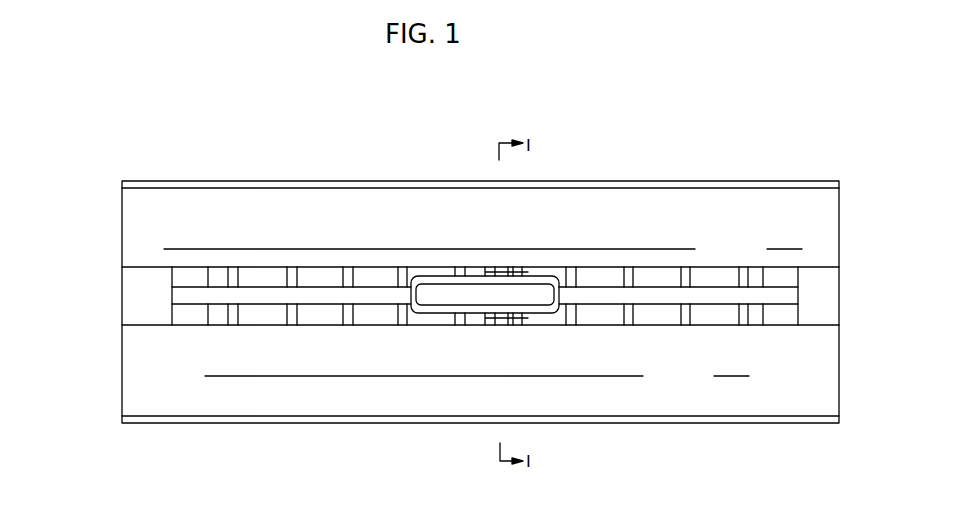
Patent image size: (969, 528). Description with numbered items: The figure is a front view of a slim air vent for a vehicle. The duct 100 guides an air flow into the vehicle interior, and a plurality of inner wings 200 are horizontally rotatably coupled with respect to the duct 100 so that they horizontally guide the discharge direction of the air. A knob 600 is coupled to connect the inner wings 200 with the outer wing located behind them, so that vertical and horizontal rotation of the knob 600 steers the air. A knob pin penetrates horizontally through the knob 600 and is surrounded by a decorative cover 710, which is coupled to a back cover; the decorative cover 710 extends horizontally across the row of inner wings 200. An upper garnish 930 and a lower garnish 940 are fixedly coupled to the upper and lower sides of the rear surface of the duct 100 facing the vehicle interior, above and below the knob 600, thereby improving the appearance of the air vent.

The duct 100 is at (137, 293).
The inner wings 200 is at (347, 278).
The knob 600 is at (436, 282).
The decorative cover 710 is at (707, 297).
The upper garnish 930 is at (638, 213).
The lower garnish 940 is at (314, 402).